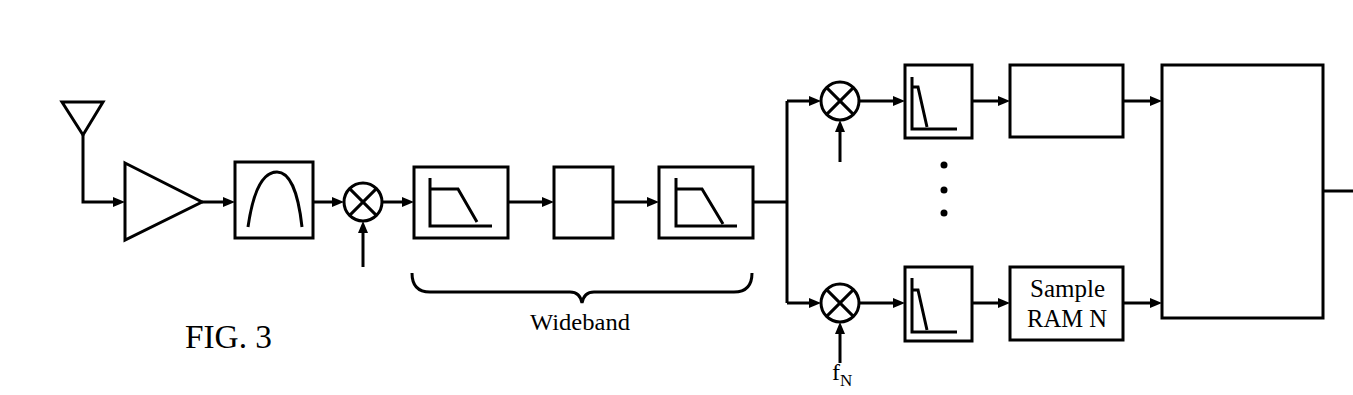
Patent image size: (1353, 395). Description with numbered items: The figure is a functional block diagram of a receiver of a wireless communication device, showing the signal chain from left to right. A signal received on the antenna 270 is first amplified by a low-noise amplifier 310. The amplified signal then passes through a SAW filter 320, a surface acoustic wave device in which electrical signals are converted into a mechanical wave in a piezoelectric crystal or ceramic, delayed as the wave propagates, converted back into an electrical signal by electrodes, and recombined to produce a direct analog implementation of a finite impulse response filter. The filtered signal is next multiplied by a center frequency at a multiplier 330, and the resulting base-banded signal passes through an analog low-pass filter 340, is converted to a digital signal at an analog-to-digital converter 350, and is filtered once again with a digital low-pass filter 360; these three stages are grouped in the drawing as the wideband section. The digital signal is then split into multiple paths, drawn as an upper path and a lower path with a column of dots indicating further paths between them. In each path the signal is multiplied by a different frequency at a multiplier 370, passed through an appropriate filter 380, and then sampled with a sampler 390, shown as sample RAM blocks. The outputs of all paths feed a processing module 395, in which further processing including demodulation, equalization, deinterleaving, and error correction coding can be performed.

The antenna 270 is at (85, 143).
The low-noise amplifier 310 is at (132, 241).
The SAW filter 320 is at (272, 239).
The multiplier 330 is at (365, 183).
The analog low-pass filter 340 is at (463, 239).
The analog-to-digital converter 350 is at (577, 239).
The digital low-pass filter 360 is at (697, 239).
The multiplier 370 is at (837, 82).
The filter 380 is at (930, 65).
The sampler 390 is at (1068, 65).
The processing module 395 is at (1255, 65).